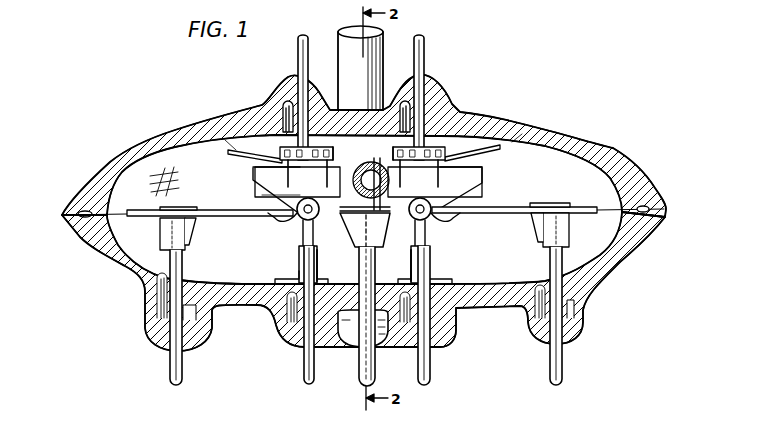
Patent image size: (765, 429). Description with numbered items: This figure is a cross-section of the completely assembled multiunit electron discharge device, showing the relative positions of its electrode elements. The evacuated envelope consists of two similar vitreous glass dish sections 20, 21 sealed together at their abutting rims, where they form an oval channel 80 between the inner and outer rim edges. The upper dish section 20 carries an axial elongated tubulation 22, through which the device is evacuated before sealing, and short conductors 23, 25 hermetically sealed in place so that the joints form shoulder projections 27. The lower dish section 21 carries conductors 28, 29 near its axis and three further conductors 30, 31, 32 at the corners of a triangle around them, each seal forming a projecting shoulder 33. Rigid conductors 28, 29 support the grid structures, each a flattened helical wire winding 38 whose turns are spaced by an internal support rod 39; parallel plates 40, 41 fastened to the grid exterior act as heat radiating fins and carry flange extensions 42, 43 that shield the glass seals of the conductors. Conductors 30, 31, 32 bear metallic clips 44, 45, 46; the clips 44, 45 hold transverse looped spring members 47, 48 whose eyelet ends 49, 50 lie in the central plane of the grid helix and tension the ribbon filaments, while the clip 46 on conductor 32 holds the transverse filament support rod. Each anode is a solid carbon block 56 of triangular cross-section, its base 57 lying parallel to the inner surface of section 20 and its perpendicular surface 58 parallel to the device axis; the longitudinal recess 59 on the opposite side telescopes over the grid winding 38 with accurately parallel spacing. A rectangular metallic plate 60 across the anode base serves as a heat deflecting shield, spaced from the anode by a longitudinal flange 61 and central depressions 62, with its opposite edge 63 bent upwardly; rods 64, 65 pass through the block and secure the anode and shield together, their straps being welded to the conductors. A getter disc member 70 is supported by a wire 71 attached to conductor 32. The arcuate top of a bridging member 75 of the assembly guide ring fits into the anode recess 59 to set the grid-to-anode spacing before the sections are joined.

The dish section 20 is at (612, 151).
The dish section 21 is at (622, 258).
The axial elongated tubulation 22 is at (348, 34).
The short conductor 23 is at (297, 41).
The short conductor 25 is at (426, 47).
The shoulder projection 27 is at (283, 85).
The conductor 28 is at (303, 373).
The conductor 29 is at (431, 373).
The conductor 30 is at (170, 377).
The conductor 31 is at (563, 370).
The conductor 32 is at (376, 373).
The projecting shoulder 33 is at (152, 338).
The helical wire winding 38 is at (316, 215).
The internal support rod 39 is at (302, 229).
The parallel plate 40 is at (299, 256).
The parallel plate 41 is at (317, 268).
The flange extension 42 is at (285, 278).
The flange extension 43 is at (320, 281).
The metallic clip 44 is at (163, 223).
The metallic clip 45 is at (571, 230).
The metallic clip 46 is at (350, 241).
The looped spring member 47 is at (226, 216).
The looped spring member 48 is at (510, 213).
The eyelet end 49 is at (293, 210).
The eyelet end 50 is at (443, 211).
The solid carbon block 56 is at (251, 180).
The base 57 is at (253, 168).
The perpendicular surface 58 is at (357, 176).
The longitudinal recess 59 is at (283, 220).
The rectangular metallic plate 60 is at (238, 150).
The longitudinal flange 61 is at (335, 156).
The central depression 62 is at (292, 176).
The opposite edge 63 is at (230, 142).
The rod 64 is at (290, 177).
The rod 65 is at (305, 191).
The disc member 70 is at (357, 191).
The wire 71 is at (372, 160).
The bridging member 75 is at (338, 120).
The oval channel 80 is at (75, 212).